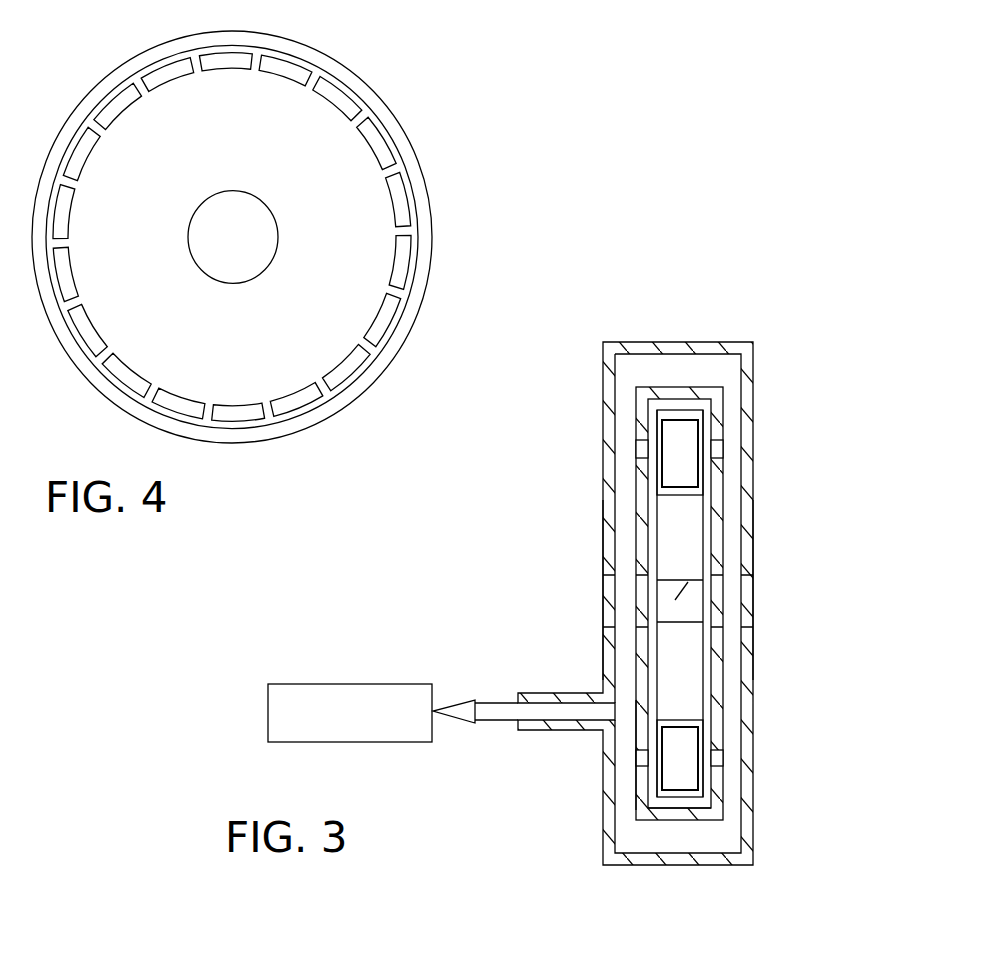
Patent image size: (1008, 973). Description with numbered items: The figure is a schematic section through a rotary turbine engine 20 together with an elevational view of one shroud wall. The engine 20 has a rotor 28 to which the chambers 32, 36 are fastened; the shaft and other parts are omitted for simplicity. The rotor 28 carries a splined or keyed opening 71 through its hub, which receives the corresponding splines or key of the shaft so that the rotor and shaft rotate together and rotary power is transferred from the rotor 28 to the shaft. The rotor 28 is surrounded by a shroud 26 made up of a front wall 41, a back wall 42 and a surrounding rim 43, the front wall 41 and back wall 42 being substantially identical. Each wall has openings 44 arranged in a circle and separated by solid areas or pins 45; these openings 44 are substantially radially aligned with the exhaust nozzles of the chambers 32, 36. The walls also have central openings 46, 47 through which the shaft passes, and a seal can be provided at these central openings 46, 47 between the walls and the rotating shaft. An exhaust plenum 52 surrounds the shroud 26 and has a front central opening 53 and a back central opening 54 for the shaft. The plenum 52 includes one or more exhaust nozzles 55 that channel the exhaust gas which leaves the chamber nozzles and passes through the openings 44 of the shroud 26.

In FIG. 3, the engine 20 is at (598, 410).
In FIG. 4, the shroud 26 is at (327, 250).
In FIG. 3, the shroud 26 is at (695, 387).
In FIG. 3, the rotor 28 is at (682, 672).
In FIG. 3, the chamber 32 is at (685, 467).
In FIG. 3, the chamber 36 is at (700, 800).
In FIG. 4, the front wall 41 is at (300, 237).
In FIG. 3, the front wall 41 is at (636, 787).
In FIG. 3, the back wall 42 is at (678, 775).
In FIG. 3, the surrounding rim 43 is at (680, 820).
In FIG. 3, the openings 44 is at (633, 452).
In FIG. 4, the solid areas or pins 45 is at (320, 80).
In FIG. 3, the central opening 46 is at (645, 595).
In FIG. 3, the central opening 47 is at (715, 603).
In FIG. 3, the exhaust plenum 52 is at (655, 343).
In FIG. 3, the front central opening 53 is at (608, 625).
In FIG. 3, the back central opening 54 is at (748, 592).
In FIG. 3, the exhaust nozzle 55 is at (558, 693).
In FIG. 3, the splined or keyed opening 71 is at (675, 600).